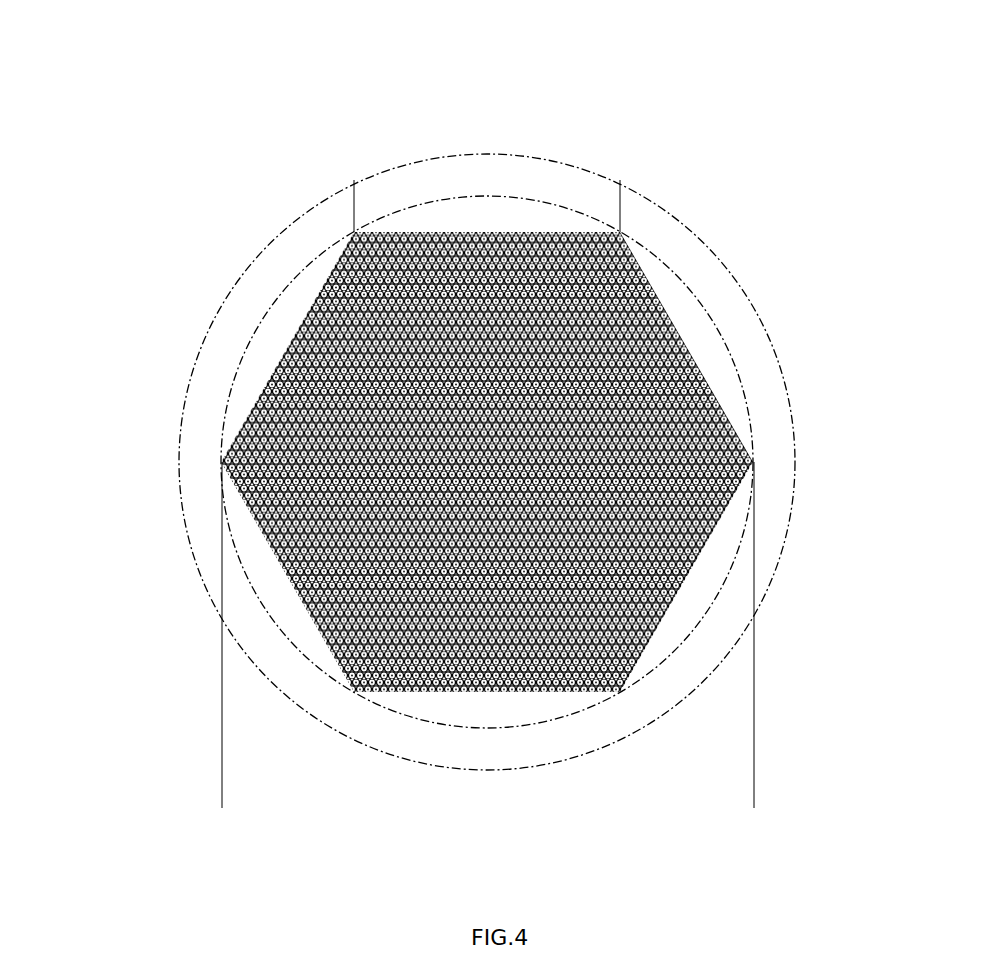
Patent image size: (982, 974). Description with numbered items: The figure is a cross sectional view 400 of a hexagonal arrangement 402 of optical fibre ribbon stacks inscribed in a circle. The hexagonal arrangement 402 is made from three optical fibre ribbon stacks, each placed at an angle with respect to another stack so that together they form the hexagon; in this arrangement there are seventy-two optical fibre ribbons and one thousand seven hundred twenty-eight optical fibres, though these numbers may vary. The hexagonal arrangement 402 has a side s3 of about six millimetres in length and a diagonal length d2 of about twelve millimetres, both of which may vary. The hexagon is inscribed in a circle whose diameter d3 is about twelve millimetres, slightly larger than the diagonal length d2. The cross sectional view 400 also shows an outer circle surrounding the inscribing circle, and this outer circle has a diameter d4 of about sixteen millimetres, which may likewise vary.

The cross sectional view 400 is at (56, 37).
The hexagonal arrangement 402 is at (273, 338).
The side s3 is at (620, 185).
The diagonal length d2 is at (222, 802).
The diameter of the circle d3 is at (262, 643).
The diameter of the outer circle d4 is at (150, 498).